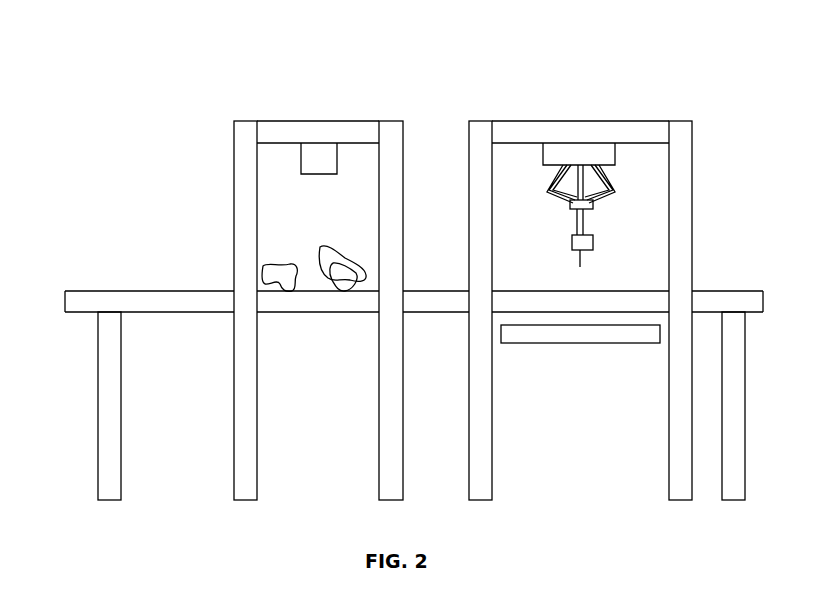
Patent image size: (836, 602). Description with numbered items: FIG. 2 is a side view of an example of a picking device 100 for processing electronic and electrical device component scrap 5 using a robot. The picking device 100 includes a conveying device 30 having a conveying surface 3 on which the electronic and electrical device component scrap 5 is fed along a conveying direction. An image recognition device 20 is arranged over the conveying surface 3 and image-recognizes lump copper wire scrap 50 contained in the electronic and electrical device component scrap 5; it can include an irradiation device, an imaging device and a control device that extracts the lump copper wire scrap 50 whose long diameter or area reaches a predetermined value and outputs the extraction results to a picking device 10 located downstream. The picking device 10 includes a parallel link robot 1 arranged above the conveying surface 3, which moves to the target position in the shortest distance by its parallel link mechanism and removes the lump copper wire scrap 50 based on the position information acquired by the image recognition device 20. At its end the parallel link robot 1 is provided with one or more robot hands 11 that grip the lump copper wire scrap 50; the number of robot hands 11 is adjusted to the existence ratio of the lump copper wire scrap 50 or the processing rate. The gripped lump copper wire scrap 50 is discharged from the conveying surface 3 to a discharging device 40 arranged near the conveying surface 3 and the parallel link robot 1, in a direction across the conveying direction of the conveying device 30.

The picking device 100 is at (145, 83).
The image recognition device 20 is at (310, 120).
The picking device 10 is at (547, 119).
The parallel link robot 1 is at (584, 216).
The robot hand 11 is at (565, 267).
The conveying surface 3 is at (391, 361).
The conveying device 30 is at (65, 295).
The electronic and electrical device component scrap 5 is at (283, 283).
The lump copper wire scrap 50 is at (342, 285).
The discharging device 40 is at (592, 344).